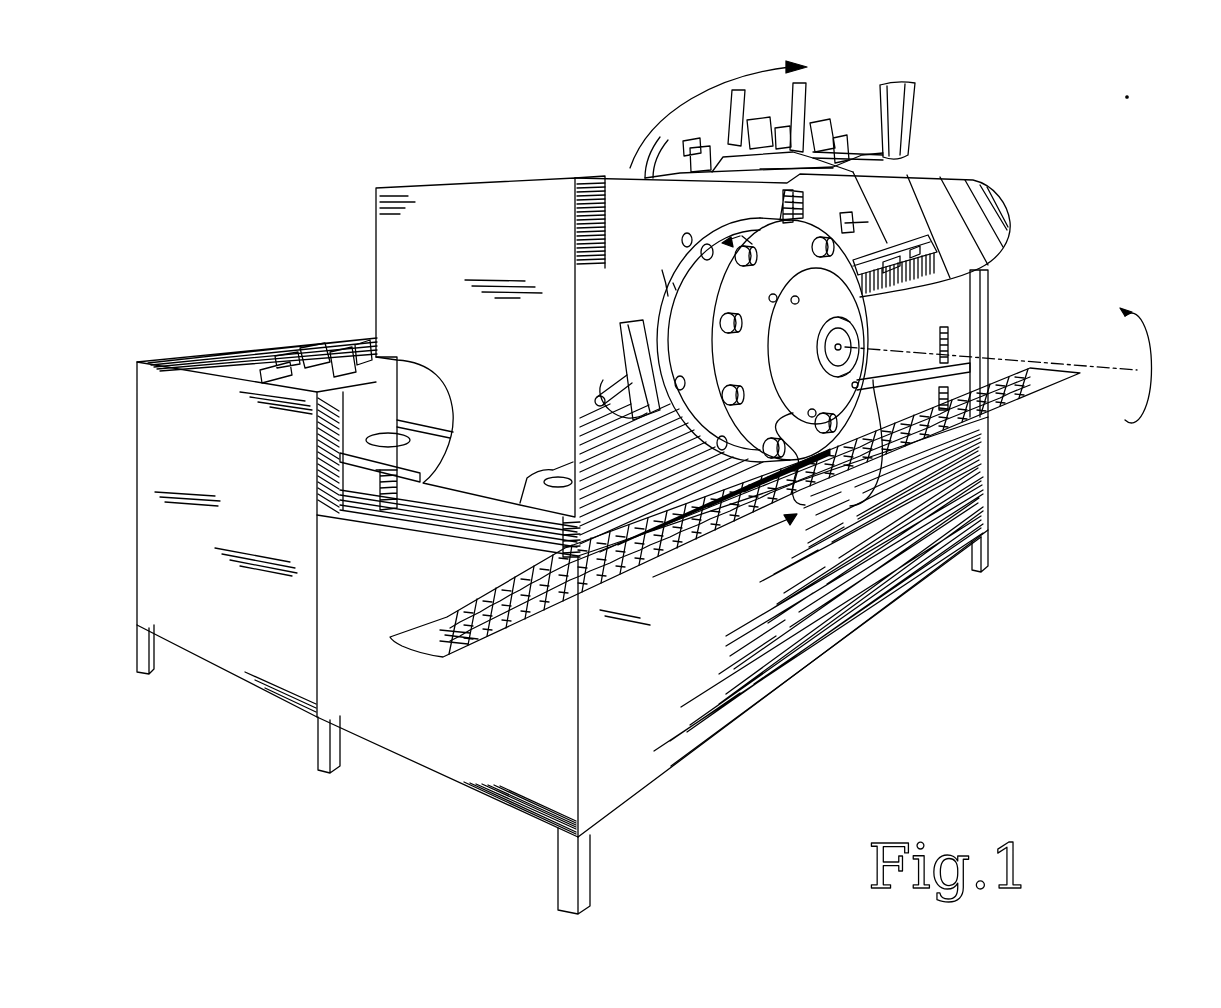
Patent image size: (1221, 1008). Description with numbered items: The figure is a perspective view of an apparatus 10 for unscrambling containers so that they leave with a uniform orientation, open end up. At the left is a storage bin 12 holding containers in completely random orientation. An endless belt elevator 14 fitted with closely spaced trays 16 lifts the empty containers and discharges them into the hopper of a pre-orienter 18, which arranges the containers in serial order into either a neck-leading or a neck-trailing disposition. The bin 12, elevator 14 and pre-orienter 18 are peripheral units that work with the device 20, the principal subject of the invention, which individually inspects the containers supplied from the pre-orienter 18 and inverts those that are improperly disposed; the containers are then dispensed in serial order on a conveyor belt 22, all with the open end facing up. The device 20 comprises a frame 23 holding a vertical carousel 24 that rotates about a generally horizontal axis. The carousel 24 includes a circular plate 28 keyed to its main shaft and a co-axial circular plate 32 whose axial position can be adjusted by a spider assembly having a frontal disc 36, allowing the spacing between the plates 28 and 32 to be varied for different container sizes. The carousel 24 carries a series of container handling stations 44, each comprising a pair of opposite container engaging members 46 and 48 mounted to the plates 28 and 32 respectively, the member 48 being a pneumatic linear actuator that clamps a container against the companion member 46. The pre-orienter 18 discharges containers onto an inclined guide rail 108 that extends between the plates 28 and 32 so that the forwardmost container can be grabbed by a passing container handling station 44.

The apparatus 10 is at (500, 132).
The storage bin 12 is at (147, 447).
The endless belt elevator 14 is at (895, 92).
The trays 16 is at (878, 84).
The pre-orienter 18 is at (970, 215).
The device 20 is at (432, 183).
The conveyor belt 22 is at (448, 629).
The frame 23 is at (420, 472).
The vertical carousel 24 is at (656, 267).
The circular plate 28 is at (752, 371).
The circular plate 32 is at (673, 283).
The frontal disc 36 is at (805, 374).
The container handling station 44 is at (748, 232).
The container engaging member 46 is at (805, 505).
The container engaging member 48 is at (704, 252).
The inclined guide rail 108 is at (890, 286).